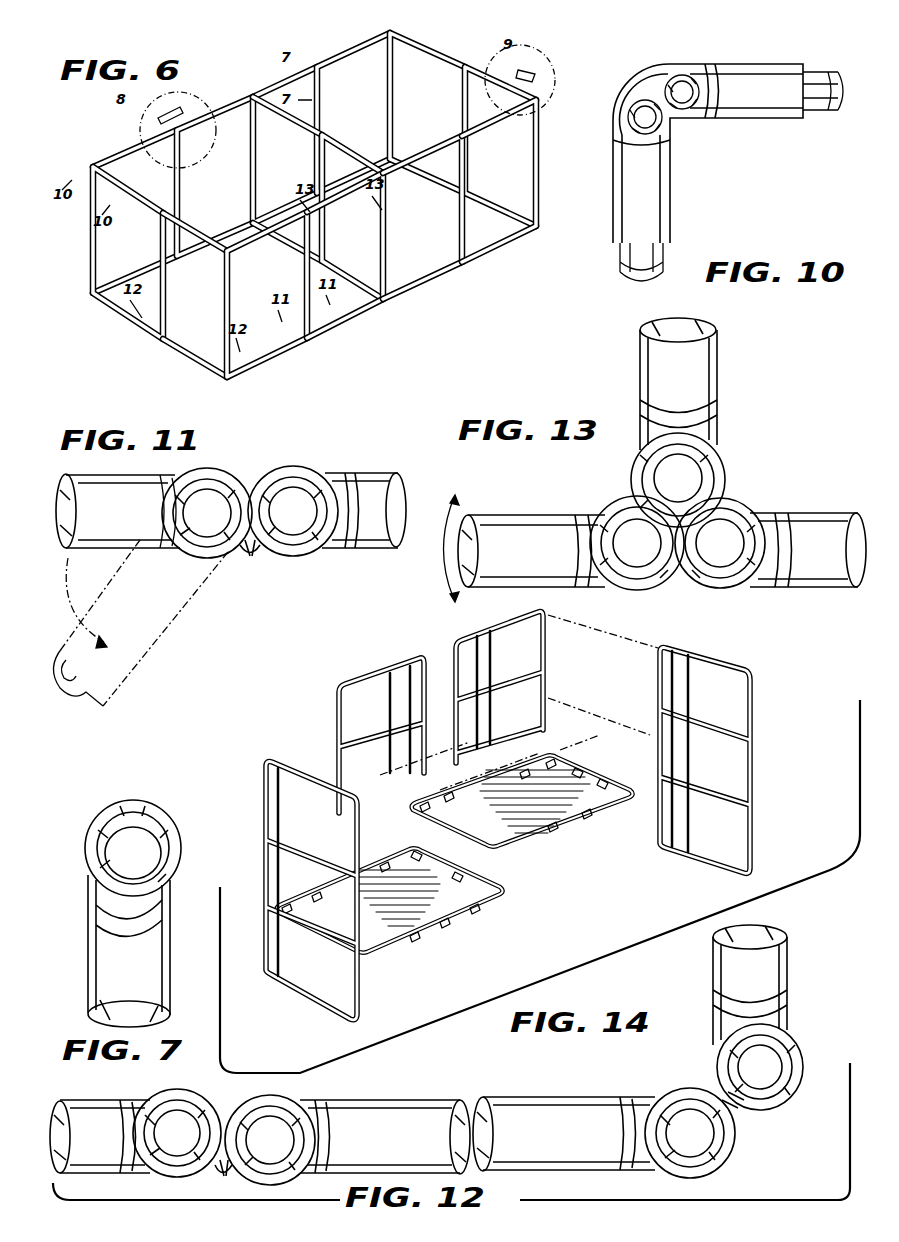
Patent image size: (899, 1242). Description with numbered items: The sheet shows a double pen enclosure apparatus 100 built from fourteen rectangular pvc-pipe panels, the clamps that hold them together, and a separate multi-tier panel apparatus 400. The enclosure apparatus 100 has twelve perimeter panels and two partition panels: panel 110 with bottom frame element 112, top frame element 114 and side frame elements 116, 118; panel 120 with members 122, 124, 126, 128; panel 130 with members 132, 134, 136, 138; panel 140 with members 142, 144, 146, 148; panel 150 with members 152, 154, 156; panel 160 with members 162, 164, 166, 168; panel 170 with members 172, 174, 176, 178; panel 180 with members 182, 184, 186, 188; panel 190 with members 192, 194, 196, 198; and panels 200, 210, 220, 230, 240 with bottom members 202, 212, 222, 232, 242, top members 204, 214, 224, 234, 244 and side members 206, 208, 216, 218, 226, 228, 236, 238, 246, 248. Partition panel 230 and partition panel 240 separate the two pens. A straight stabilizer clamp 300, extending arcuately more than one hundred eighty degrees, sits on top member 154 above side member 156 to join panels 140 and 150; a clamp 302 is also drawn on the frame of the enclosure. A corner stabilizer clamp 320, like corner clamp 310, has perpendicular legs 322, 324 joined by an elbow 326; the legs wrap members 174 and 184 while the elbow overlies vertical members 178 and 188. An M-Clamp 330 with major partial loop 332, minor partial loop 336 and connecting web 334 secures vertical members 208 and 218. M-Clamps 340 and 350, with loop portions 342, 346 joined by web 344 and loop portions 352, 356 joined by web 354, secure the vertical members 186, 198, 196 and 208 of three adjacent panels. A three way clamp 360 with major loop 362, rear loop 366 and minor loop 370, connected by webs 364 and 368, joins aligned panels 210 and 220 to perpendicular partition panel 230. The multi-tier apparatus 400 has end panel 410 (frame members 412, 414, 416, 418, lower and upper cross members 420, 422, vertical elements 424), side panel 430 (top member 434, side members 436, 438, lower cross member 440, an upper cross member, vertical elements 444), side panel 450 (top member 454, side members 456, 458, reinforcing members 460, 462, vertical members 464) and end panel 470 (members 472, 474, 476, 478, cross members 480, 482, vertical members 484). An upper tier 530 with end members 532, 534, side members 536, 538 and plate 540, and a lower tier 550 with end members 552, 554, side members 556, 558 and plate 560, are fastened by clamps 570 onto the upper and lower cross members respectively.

In FIG. 6, the double pen or enclosure apparatus 100 is at (313, 215).
In FIG. 6, the panel 110 is at (500, 250).
In FIG. 6, the bottom frame element 112 is at (490, 272).
In FIG. 6, the top frame element 114 is at (520, 160).
In FIG. 6, the side frame element 116 is at (515, 175).
In FIG. 6, the side frame element 118 is at (472, 238).
In FIG. 6, the panel 120 is at (532, 128).
In FIG. 6, the bottom frame member 122 is at (505, 200).
In FIG. 6, the top frame member 124 is at (485, 75).
In FIG. 6, the side frame member 126 is at (537, 145).
In FIG. 6, the side frame member 128 is at (468, 152).
In FIG. 6, the panel 130 is at (420, 38).
In FIG. 6, the bottom frame member 132 is at (405, 200).
In FIG. 6, the top frame member 134 is at (430, 52).
In FIG. 6, the side frame member 136 is at (452, 90).
In FIG. 6, the side frame member 138 is at (395, 85).
In FIG. 6, the panel 140 is at (345, 45).
In FIG. 6, the bottom frame member 142 is at (385, 150).
In FIG. 6, the top frame member 144 is at (350, 75).
In FIG. 6, the side frame member 146 is at (362, 82).
In FIG. 6, the side frame member 148 is at (340, 96).
In FIG. 6, the panel 150 is at (290, 75).
In FIG. 7, the panel 150 is at (172, 932).
In FIG. 6, the bottom frame member 152 is at (245, 200).
In FIG. 6, the top frame member 154 is at (285, 80).
In FIG. 7, the top frame member 154 is at (100, 882).
In FIG. 6, the side frame member 156 is at (315, 125).
In FIG. 7, the side frame member 156 is at (150, 970).
In FIG. 6, the panel 160 is at (220, 85).
In FIG. 6, the bottom frame member 162 is at (235, 218).
In FIG. 6, the top frame member 164 is at (240, 130).
In FIG. 6, the side frame member 166 is at (245, 165).
In FIG. 6, the side frame member 168 is at (180, 200).
In FIG. 6, the panel 170 is at (130, 150).
In FIG. 10, the panel 170 is at (612, 258).
In FIG. 6, the bottom frame member 172 is at (160, 258).
In FIG. 6, the top frame member 174 is at (93, 175).
In FIG. 10, the top frame member 174 is at (620, 268).
In FIG. 6, the side frame member 176 is at (150, 200).
In FIG. 6, the side frame member 178 is at (90, 265).
In FIG. 10, the side frame member 178 is at (668, 135).
In FIG. 6, the panel 180 is at (100, 330).
In FIG. 10, the panel 180 is at (828, 62).
In FIG. 12, the panel 180 is at (100, 1095).
In FIG. 6, the bottom frame member 182 is at (130, 325).
In FIG. 12, the bottom frame member 182 is at (100, 1175).
In FIG. 6, the top frame member 184 is at (128, 185).
In FIG. 10, the top frame member 184 is at (826, 114).
In FIG. 6, the side frame member 186 is at (160, 240).
In FIG. 12, the side frame member 186 is at (192, 1110).
In FIG. 6, the side frame member 188 is at (104, 272).
In FIG. 10, the side frame member 188 is at (698, 110).
In FIG. 6, the panel 190 is at (175, 378).
In FIG. 12, the panel 190 is at (507, 1087).
In FIG. 6, the bottom frame member 192 is at (195, 370).
In FIG. 12, the bottom frame member 192 is at (405, 1098).
In FIG. 6, the top frame member 194 is at (215, 265).
In FIG. 6, the side frame member 196 is at (222, 295).
In FIG. 12, the side frame member 196 is at (690, 1090).
In FIG. 6, the side frame member 198 is at (180, 318).
In FIG. 12, the side frame member 198 is at (258, 1105).
In FIG. 6, the panel 200 is at (235, 385).
In FIG. 11, the panel 200 is at (120, 475).
In FIG. 12, the panel 200 is at (710, 982).
In FIG. 6, the bottom frame member 202 is at (255, 365).
In FIG. 11, the bottom frame member 202 is at (145, 478).
In FIG. 12, the bottom frame member 202 is at (713, 1002).
In FIG. 6, the top frame member 204 is at (265, 258).
In FIG. 6, the side frame member 206 is at (268, 292).
In FIG. 11, the side frame member 206 is at (240, 485).
In FIG. 6, the side frame member 208 is at (262, 318).
In FIG. 12, the side frame member 208 is at (720, 1060).
In FIG. 6, the panel 210 is at (335, 345).
In FIG. 11, the panel 210 is at (355, 468).
In FIG. 13, the panel 210 is at (520, 505).
In FIG. 6, the bottom frame member 212 is at (365, 325).
In FIG. 11, the bottom frame member 212 is at (390, 485).
In FIG. 13, the bottom frame member 212 is at (572, 512).
In FIG. 6, the top frame member 214 is at (330, 230).
In FIG. 6, the side frame member 216 is at (350, 265).
In FIG. 13, the side frame member 216 is at (662, 590).
In FIG. 6, the side frame member 218 is at (305, 350).
In FIG. 11, the side frame member 218 is at (275, 468).
In FIG. 6, the panel 220 is at (390, 310).
In FIG. 13, the panel 220 is at (805, 510).
In FIG. 6, the bottom frame member 222 is at (435, 288).
In FIG. 13, the bottom frame member 222 is at (815, 586).
In FIG. 6, the top frame member 224 is at (430, 140).
In FIG. 6, the side frame member 226 is at (440, 215).
In FIG. 6, the side frame member 228 is at (390, 260).
In FIG. 13, the side frame member 228 is at (700, 588).
In FIG. 6, the panel 230 is at (335, 135).
In FIG. 13, the panel 230 is at (725, 358).
In FIG. 6, the bottom frame member 232 is at (375, 308).
In FIG. 6, the top frame member 234 is at (310, 150).
In FIG. 13, the side frame member 236 is at (635, 462).
In FIG. 6, the side frame member 238 is at (312, 165).
In FIG. 6, the panel 240 is at (255, 85).
In FIG. 6, the bottom frame member 242 is at (290, 262).
In FIG. 6, the top frame member 244 is at (255, 130).
In FIG. 6, the side frame member 246 is at (280, 190).
In FIG. 6, the side frame member 248 is at (248, 152).
In FIG. 6, the straight stabilizer clamp 300 is at (318, 52).
In FIG. 7, the straight stabilizer clamp 300 is at (133, 800).
In FIG. 6, the clip connector 302 is at (182, 105).
In FIG. 6, the corner stabilizer clamp 310 is at (525, 60).
In FIG. 10, the corner stabilizer clamp 320 is at (714, 52).
In FIG. 6, the leg 322 is at (88, 160).
In FIG. 10, the leg 322 is at (748, 70).
In FIG. 10, the leg 324 is at (612, 212).
In FIG. 10, the elbow or juncture 326 is at (633, 70).
In FIG. 11, the M-Clamp 330 is at (280, 555).
In FIG. 11, the partial major loop 332 is at (222, 468).
In FIG. 11, the connecting web 334 is at (250, 560).
In FIG. 11, the partial minor loop 336 is at (312, 468).
In FIG. 12, the M-Clamp 340 is at (210, 1100).
In FIG. 12, the major partial loop portion 342 is at (145, 1098).
In FIG. 12, the connecting web 344 is at (224, 1176).
In FIG. 12, the minor partial loop portion 346 is at (292, 1102).
In FIG. 12, the M-Clamp 350 is at (745, 1158).
In FIG. 12, the major partial loop portion 352 is at (722, 1170).
In FIG. 12, the connecting web 354 is at (748, 1122).
In FIG. 12, the minor partial loop portion 356 is at (800, 1050).
In FIG. 13, the three way clamp 360 is at (730, 438).
In FIG. 13, the major partial loop 362 is at (606, 582).
In FIG. 13, the connecting web 364 is at (612, 508).
In FIG. 13, the rear partial loop 366 is at (728, 468).
In FIG. 13, the connecting web 368 is at (740, 500).
In FIG. 13, the minor partial loop 370 is at (755, 580).
In FIG. 14, the multi-tier panel apparatus 400 is at (292, 670).
In FIG. 14, the end panel 410 is at (760, 670).
In FIG. 14, the bottom horizontally extending frame member 412 is at (720, 870).
In FIG. 14, the top horizontally extending frame member 414 is at (710, 656).
In FIG. 14, the vertically extending side frame member 416 is at (752, 750).
In FIG. 14, the vertically extending side frame member 418 is at (657, 670).
In FIG. 14, the lower cross member 420 is at (748, 800).
In FIG. 14, the upper cross member 422 is at (720, 720).
In FIG. 14, the vertically extending elements 424 is at (690, 690).
In FIG. 14, the side panel 430 is at (455, 638).
In FIG. 14, the top horizontally extending outer frame member 434 is at (490, 628).
In FIG. 14, the vertically extending outer side frame member 436 is at (543, 650).
In FIG. 14, the vertically extending outer side frame member 438 is at (425, 770).
In FIG. 14, the lower cross member 440 is at (520, 745).
In FIG. 14, the inner vertical elements 444 is at (478, 655).
In FIG. 14, the side panel 450 is at (358, 670).
In FIG. 14, the top horizontally extending frame member 454 is at (320, 680).
In FIG. 14, the vertically extending side frame member 456 is at (412, 668).
In FIG. 14, the vertically extending side frame member 458 is at (300, 720).
In FIG. 14, the horizontally extending reinforcing frame member 460 is at (345, 790).
In FIG. 14, the horizontally extending reinforcing frame member 462 is at (372, 740).
In FIG. 14, the vertically extending members 464 is at (392, 672).
In FIG. 14, the end panel 470 is at (265, 760).
In FIG. 14, the bottom horizontally extending outer frame member 472 is at (300, 1005).
In FIG. 14, the top horizontally extending outer frame member 474 is at (300, 765).
In FIG. 14, the vertically extending outer side frame member 476 is at (365, 1005).
In FIG. 14, the vertically extending outer side frame member 478 is at (263, 800).
In FIG. 14, the lower cross member 480 is at (315, 945).
In FIG. 14, the upper cross member 482 is at (300, 852).
In FIG. 14, the vertical members 484 is at (285, 808).
In FIG. 14, the upper tier 530 is at (585, 770).
In FIG. 14, the end frame member 532 is at (620, 775).
In FIG. 14, the end frame member 534 is at (420, 856).
In FIG. 14, the side frame member 536 is at (610, 815).
In FIG. 14, the side frame member 538 is at (495, 808).
In FIG. 14, the plate 540 is at (540, 843).
In FIG. 14, the lower tier 550 is at (510, 890).
In FIG. 14, the end frame member 552 is at (475, 886).
In FIG. 14, the end frame member 554 is at (340, 895).
In FIG. 14, the side frame member 556 is at (440, 940).
In FIG. 14, the side frame member 558 is at (370, 856).
In FIG. 14, the plate 560 is at (415, 945).
In FIG. 14, the clamps 570 is at (470, 935).